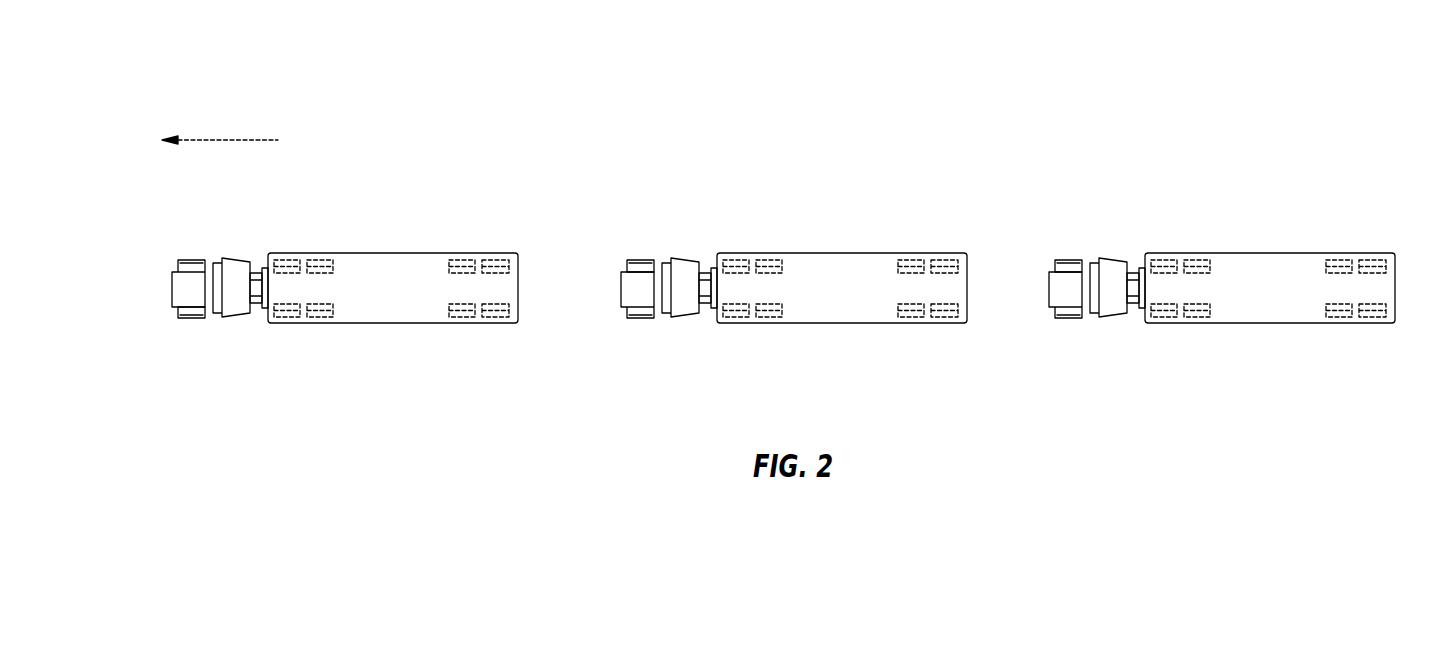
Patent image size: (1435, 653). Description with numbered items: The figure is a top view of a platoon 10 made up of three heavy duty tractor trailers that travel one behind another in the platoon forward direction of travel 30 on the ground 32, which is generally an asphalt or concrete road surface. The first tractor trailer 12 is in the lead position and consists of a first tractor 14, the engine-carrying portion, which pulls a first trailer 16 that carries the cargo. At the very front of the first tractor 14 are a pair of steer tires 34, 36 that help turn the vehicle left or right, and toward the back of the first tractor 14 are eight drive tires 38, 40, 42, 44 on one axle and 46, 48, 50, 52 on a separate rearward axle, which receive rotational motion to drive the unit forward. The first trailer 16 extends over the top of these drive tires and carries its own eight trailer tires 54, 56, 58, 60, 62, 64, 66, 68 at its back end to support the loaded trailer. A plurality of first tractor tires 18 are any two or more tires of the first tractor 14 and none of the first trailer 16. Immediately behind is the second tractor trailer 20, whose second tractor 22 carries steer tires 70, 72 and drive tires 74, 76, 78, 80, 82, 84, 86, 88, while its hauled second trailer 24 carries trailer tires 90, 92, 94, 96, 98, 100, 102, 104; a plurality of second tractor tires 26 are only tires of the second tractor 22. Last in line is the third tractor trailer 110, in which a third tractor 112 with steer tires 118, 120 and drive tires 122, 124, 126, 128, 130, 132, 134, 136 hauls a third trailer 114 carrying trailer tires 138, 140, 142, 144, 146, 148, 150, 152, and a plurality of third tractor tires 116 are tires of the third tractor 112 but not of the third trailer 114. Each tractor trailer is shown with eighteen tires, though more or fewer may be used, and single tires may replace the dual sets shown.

The platoon 10 is at (1131, 106).
The first tractor trailer 12 is at (371, 198).
The first tractor 14 is at (242, 257).
The first trailer 16 is at (405, 258).
The plurality of first tractor tires 18 is at (193, 258).
The second tractor trailer 20 is at (818, 199).
The second tractor 22 is at (680, 260).
The second trailer 24 is at (853, 257).
The plurality of second tractor tires 26 is at (635, 315).
The platoon forward direction of travel 30 is at (253, 140).
The ground 32 is at (585, 312).
The steer tire 34 is at (185, 318).
The steer tire 36 is at (188, 283).
The drive tire 38 is at (282, 325).
The drive tire 40 is at (263, 322).
The drive tire 42 is at (257, 258).
The drive tire 44 is at (292, 257).
The drive tire 46 is at (323, 325).
The drive tire 48 is at (333, 305).
The drive tire 50 is at (333, 268).
The drive tire 52 is at (320, 257).
The trailer tire 54 is at (455, 323).
The trailer tire 56 is at (455, 305).
The trailer tire 58 is at (455, 266).
The trailer tire 60 is at (462, 255).
The trailer tire 62 is at (500, 323).
The trailer tire 64 is at (511, 308).
The trailer tire 66 is at (511, 271).
The trailer tire 68 is at (502, 255).
The steer tire 70 is at (637, 295).
The steer tire 72 is at (643, 260).
The drive tire 74 is at (715, 310).
The drive tire 76 is at (730, 323).
The drive tire 78 is at (740, 257).
The drive tire 80 is at (702, 259).
The drive tire 82 is at (772, 323).
The drive tire 84 is at (783, 305).
The drive tire 86 is at (783, 266).
The drive tire 88 is at (765, 257).
The trailer tire 90 is at (902, 323).
The trailer tire 92 is at (900, 305).
The trailer tire 94 is at (900, 266).
The trailer tire 96 is at (911, 255).
The trailer tire 98 is at (947, 323).
The trailer tire 100 is at (960, 308).
The trailer tire 102 is at (960, 271).
The trailer tire 104 is at (952, 255).
The third tractor trailer 110 is at (1245, 199).
The third tractor 112 is at (1110, 262).
The third trailer 114 is at (1282, 257).
The plurality of third tractor tires 116 is at (1063, 316).
The steer tire 118 is at (1065, 295).
The steer tire 120 is at (1058, 262).
The drive tire 122 is at (1157, 325).
The drive tire 124 is at (1143, 310).
The drive tire 126 is at (1137, 262).
The drive tire 128 is at (1168, 258).
The drive tire 130 is at (1200, 325).
The drive tire 132 is at (1210, 305).
The drive tire 134 is at (1200, 273).
The drive tire 136 is at (1196, 258).
The trailer tire 138 is at (1340, 325).
The trailer tire 140 is at (1328, 306).
The trailer tire 142 is at (1340, 271).
The trailer tire 144 is at (1336, 257).
The trailer tire 146 is at (1365, 325).
The trailer tire 148 is at (1385, 307).
The trailer tire 150 is at (1390, 264).
The trailer tire 152 is at (1364, 257).